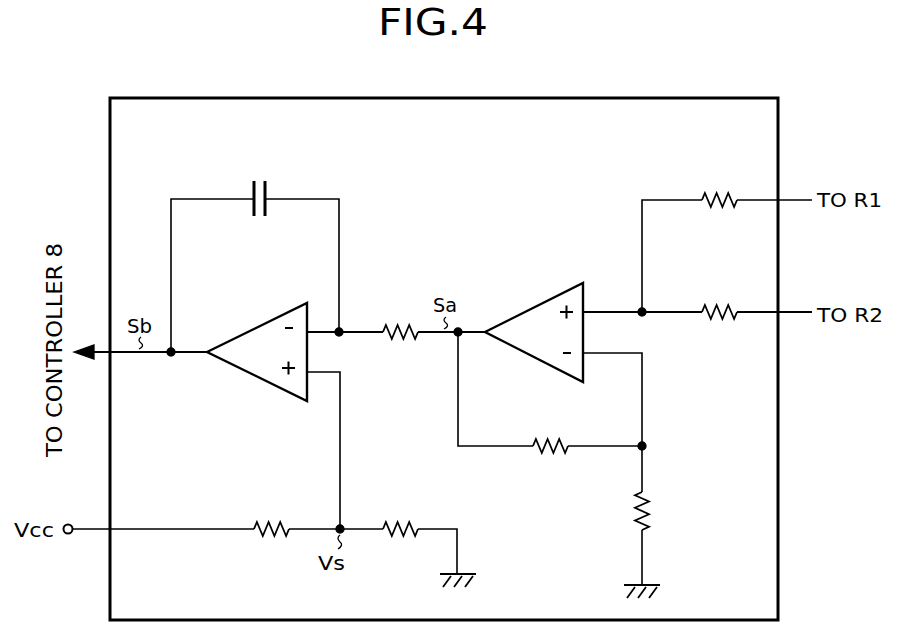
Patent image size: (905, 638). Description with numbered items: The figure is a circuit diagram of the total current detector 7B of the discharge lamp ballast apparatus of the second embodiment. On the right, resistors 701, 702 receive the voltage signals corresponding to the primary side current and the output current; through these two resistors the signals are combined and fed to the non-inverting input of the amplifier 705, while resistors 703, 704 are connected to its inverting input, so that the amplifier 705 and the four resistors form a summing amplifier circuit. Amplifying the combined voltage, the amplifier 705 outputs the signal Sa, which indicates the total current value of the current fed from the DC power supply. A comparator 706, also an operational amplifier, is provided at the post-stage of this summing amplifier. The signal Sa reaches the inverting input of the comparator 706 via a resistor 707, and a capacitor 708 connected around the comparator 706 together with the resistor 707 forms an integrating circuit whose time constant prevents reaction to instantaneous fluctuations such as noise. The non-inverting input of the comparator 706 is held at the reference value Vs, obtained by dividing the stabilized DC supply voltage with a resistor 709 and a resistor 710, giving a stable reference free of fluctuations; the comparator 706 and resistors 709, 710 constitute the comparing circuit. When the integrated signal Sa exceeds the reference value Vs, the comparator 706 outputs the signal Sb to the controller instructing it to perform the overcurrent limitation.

The total current detector 7B is at (564, 97).
The resistor 701 is at (719, 184).
The resistor 702 is at (719, 297).
The resistor 703 is at (550, 429).
The resistor 704 is at (626, 512).
The amplifier 705 is at (533, 305).
The comparator 706 is at (264, 321).
The resistor 707 is at (400, 317).
The capacitor 708 is at (258, 177).
The resistor 709 is at (269, 515).
The resistor 710 is at (400, 518).